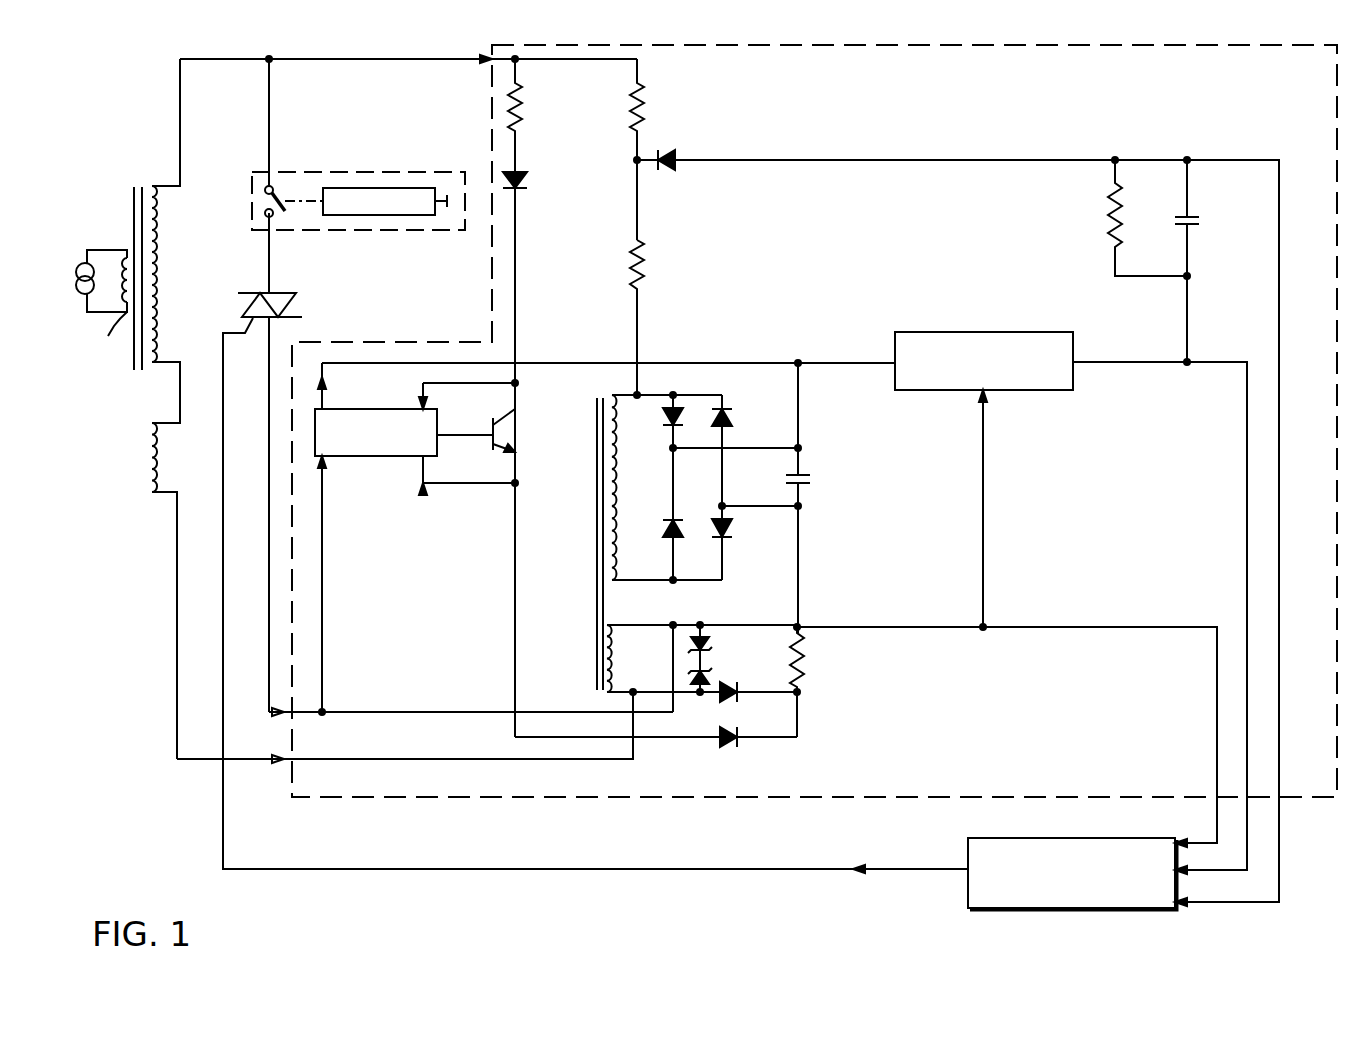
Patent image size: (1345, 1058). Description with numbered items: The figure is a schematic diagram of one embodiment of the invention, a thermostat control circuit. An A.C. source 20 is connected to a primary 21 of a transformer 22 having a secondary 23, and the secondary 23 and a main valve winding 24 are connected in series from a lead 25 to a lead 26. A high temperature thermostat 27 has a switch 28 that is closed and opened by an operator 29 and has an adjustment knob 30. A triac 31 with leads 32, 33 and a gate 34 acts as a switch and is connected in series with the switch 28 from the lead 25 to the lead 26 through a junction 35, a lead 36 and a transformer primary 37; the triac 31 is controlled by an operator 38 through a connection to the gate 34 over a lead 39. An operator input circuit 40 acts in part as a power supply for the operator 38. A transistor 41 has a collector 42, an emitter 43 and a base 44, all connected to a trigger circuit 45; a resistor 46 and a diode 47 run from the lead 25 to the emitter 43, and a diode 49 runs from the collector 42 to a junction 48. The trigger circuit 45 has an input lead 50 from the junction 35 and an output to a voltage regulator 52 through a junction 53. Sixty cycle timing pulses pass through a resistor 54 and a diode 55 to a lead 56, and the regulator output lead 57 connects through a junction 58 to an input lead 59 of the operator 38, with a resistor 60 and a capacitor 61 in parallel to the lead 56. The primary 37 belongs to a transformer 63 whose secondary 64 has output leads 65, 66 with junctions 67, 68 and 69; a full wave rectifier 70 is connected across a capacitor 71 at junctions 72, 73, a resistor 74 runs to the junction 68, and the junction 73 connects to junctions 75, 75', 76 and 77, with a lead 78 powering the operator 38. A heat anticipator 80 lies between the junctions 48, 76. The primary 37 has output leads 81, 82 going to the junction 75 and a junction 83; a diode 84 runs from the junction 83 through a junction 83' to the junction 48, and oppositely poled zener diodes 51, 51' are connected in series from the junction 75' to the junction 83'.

The A.C. source 20 is at (86, 262).
The primary 21 is at (109, 337).
The transformer 22 is at (150, 178).
The secondary 23 is at (162, 244).
The main valve winding 24 is at (163, 442).
The lead 25 is at (232, 62).
The lead 26 is at (178, 764).
The high temperature thermostat 27 is at (326, 172).
The switch 28 is at (258, 195).
The operator 29 is at (372, 218).
The adjustment knob 30 is at (448, 208).
The triac 31 is at (302, 318).
The lead 32 is at (268, 266).
The lead 33 is at (267, 343).
The gate 34 is at (246, 330).
The junction 35 is at (326, 710).
The lead 36 is at (394, 716).
The transformer primary 37 is at (620, 641).
The operator 38 is at (985, 838).
The lead 39 is at (695, 868).
The operator input circuit 40 is at (540, 798).
The transistor 41 is at (516, 426).
The collector 42 is at (496, 454).
The emitter 43 is at (498, 422).
The base 44 is at (476, 432).
The trigger circuit 45 is at (366, 462).
The resistor 46 is at (522, 108).
The diode 47 is at (524, 176).
The junction 48 is at (802, 694).
The diode 49 is at (728, 742).
The input lead 50 is at (325, 585).
The zener diode 51 is at (722, 640).
The zener diode 51' is at (727, 668).
The voltage regulator 52 is at (926, 330).
The junction 53 is at (804, 361).
The resistor 54 is at (645, 104).
The diode 55 is at (675, 160).
The lead 56 is at (1282, 532).
The output lead 57 is at (1094, 360).
The junction 58 is at (1184, 366).
The input lead 59 is at (1244, 456).
The resistor 60 is at (1108, 226).
The capacitor 61 is at (1195, 216).
The transformer 63 is at (592, 573).
The secondary 64 is at (626, 529).
The output lead 65 is at (616, 582).
The output lead 66 is at (620, 395).
The junction 67 is at (675, 582).
The junction 68 is at (633, 400).
The junction 69 is at (680, 398).
The full wave rectifier 70 is at (738, 523).
The capacitor 71 is at (810, 482).
The junction 72 is at (804, 448).
The junction 73 is at (804, 508).
The resistor 74 is at (630, 266).
The junction 75 is at (681, 643).
The junction 75' is at (728, 608).
The junction 76 is at (801, 623).
The junction 77 is at (988, 622).
The lead 78 is at (1092, 626).
The heat anticipator 80 is at (806, 658).
The output lead 81 is at (622, 625).
The output lead 82 is at (618, 695).
The junction 83 is at (645, 675).
The junction 83' is at (697, 711).
The diode 84 is at (730, 698).